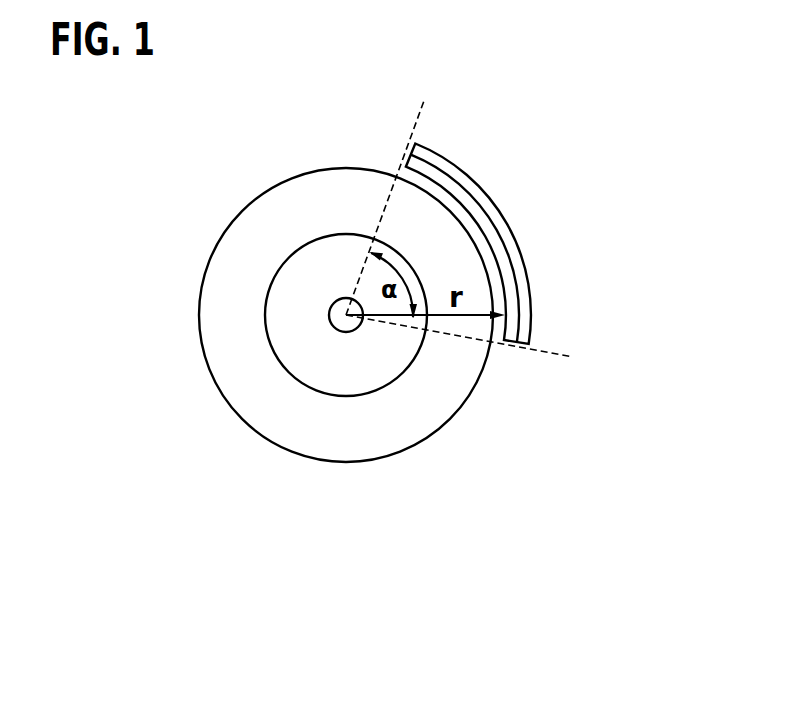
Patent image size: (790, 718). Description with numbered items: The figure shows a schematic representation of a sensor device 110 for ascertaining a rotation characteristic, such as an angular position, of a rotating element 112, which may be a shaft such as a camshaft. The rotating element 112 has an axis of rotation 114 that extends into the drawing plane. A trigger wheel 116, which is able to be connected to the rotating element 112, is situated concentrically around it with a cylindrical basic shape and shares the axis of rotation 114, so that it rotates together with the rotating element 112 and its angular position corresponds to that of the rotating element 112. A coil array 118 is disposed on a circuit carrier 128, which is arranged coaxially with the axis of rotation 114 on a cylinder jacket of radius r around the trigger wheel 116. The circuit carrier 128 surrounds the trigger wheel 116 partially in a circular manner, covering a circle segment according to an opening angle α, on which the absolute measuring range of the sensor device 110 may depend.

The sensor device 110 is at (380, 328).
The rotating element 112 is at (311, 268).
The axis of rotation 114 is at (328, 315).
The trigger wheel 116 is at (420, 405).
The coil array 118 is at (544, 244).
The circuit carrier 128 is at (518, 201).